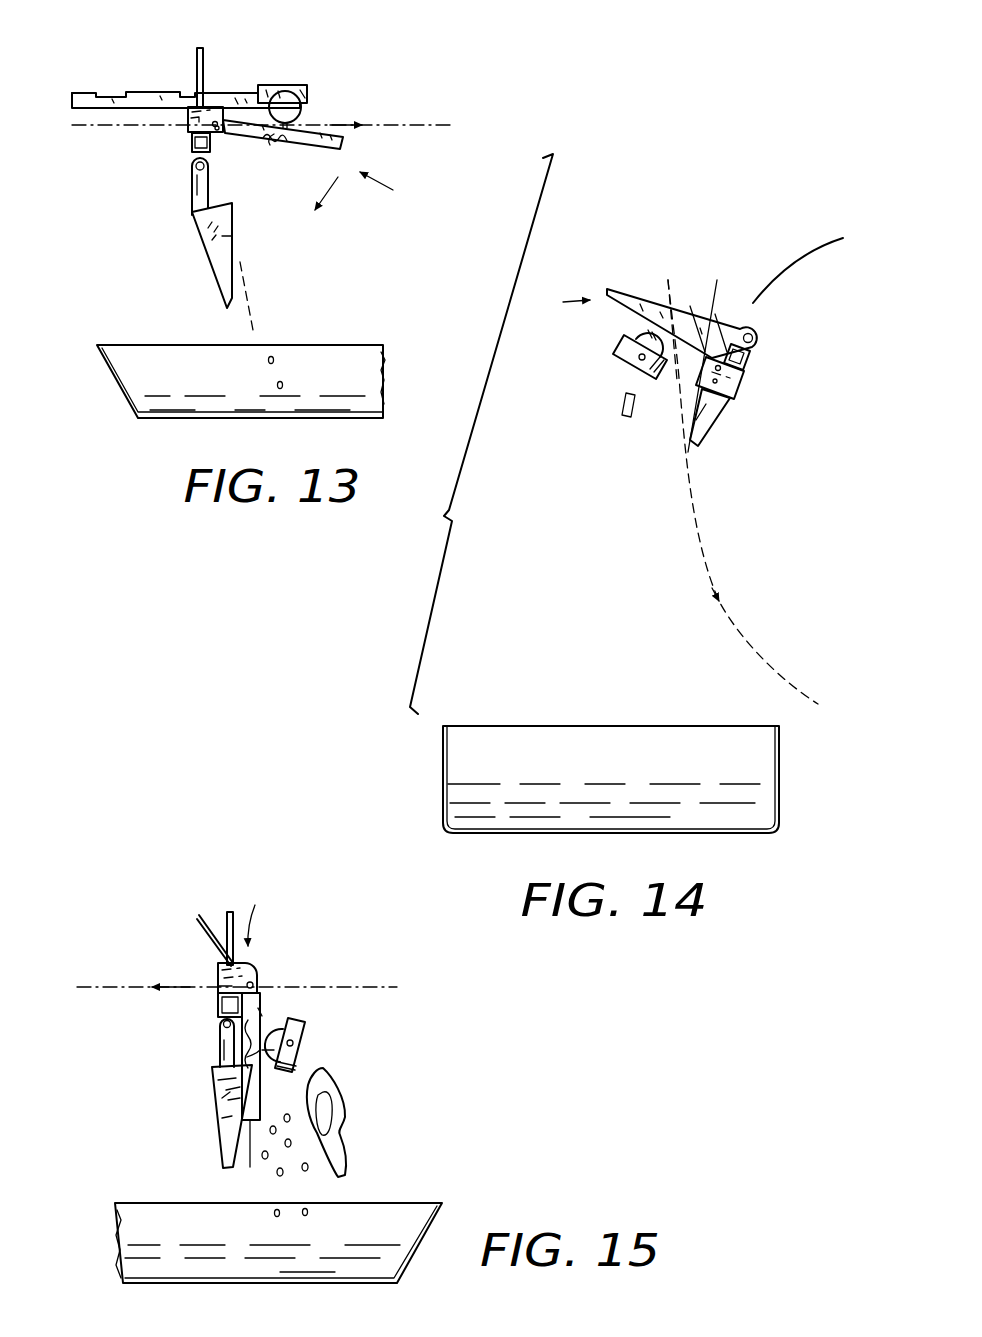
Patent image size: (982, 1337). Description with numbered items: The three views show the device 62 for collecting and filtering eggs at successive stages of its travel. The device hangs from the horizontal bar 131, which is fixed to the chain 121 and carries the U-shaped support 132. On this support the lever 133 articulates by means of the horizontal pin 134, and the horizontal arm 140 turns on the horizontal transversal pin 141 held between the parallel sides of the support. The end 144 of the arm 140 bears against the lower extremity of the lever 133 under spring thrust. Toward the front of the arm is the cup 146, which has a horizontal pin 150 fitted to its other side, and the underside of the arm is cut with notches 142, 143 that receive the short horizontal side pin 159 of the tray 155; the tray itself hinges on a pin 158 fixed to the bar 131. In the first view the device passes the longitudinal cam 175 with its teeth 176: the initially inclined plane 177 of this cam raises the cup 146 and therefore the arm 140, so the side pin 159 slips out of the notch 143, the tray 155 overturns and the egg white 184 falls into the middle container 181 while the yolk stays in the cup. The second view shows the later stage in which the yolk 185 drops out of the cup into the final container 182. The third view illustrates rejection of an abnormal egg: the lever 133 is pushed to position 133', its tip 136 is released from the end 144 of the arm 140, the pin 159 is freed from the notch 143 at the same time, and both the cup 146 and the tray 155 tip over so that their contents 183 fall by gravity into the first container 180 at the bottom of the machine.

In FIG. 13, the device for collecting and filtering eggs 62 is at (367, 191).
In FIG. 14, the device for collecting and filtering eggs 62 is at (560, 295).
In FIG. 15, the device for collecting and filtering eggs 62 is at (260, 910).
In FIG. 13, the chain 121 is at (438, 128).
In FIG. 14, the chain 121 is at (783, 673).
In FIG. 15, the chain 121 is at (97, 980).
In FIG. 13, the horizontal bar 131 is at (193, 157).
In FIG. 14, the horizontal bar 131 is at (750, 353).
In FIG. 15, the horizontal bar 131 is at (222, 1010).
In FIG. 13, the U-shaped support 132 is at (215, 105).
In FIG. 14, the U-shaped support 132 is at (723, 403).
In FIG. 13, the lever 133 is at (220, 57).
In FIG. 15, the lever 133 is at (213, 908).
In FIG. 15, the lever position 133' is at (184, 929).
In FIG. 15, the horizontal pin 134 is at (223, 967).
In FIG. 13, the tip of lever 136 is at (192, 118).
In FIG. 15, the tip of lever 136 is at (217, 988).
In FIG. 13, the horizontal arm 140 is at (340, 143).
In FIG. 14, the horizontal arm 140 is at (610, 288).
In FIG. 15, the horizontal arm 140 is at (252, 1099).
In FIG. 13, the horizontal transversal pin 141 is at (217, 133).
In FIG. 14, the horizontal transversal pin 141 is at (737, 378).
In FIG. 15, the horizontal transversal pin 141 is at (258, 977).
In FIG. 15, the notch 142 is at (247, 1057).
In FIG. 13, the notch 143 is at (265, 143).
In FIG. 14, the notch 143 is at (671, 313).
In FIG. 15, the notch 143 is at (263, 1013).
In FIG. 13, the end of horizontal arm 144 is at (193, 143).
In FIG. 15, the end of horizontal arm 144 is at (250, 968).
In FIG. 13, the cup 146 is at (295, 98).
In FIG. 14, the cup 146 is at (640, 354).
In FIG. 15, the cup 146 is at (300, 1052).
In FIG. 13, the horizontal pin 150 is at (293, 90).
In FIG. 13, the tray 155 is at (228, 285).
In FIG. 14, the tray 155 is at (719, 349).
In FIG. 15, the tray 155 is at (227, 1155).
In FIG. 13, the pin 158 is at (193, 175).
In FIG. 14, the pin 158 is at (752, 333).
In FIG. 15, the pin 158 is at (220, 1035).
In FIG. 13, the short horizontal side pin 159 is at (232, 237).
In FIG. 14, the short horizontal side pin 159 is at (676, 400).
In FIG. 15, the short horizontal side pin 159 is at (242, 1095).
In FIG. 13, the longitudinal cam 175 is at (105, 100).
In FIG. 13, the teeth 176 is at (145, 90).
In FIG. 13, the initially inclined plane 177 is at (270, 93).
In FIG. 15, the first container 180 is at (125, 1205).
In FIG. 13, the middle container 181 is at (163, 387).
In FIG. 14, the final container 182 is at (474, 817).
In FIG. 15, the rejected eggs 183 is at (342, 1176).
In FIG. 13, the egg white 184 is at (263, 312).
In FIG. 14, the yolks 185 is at (625, 412).